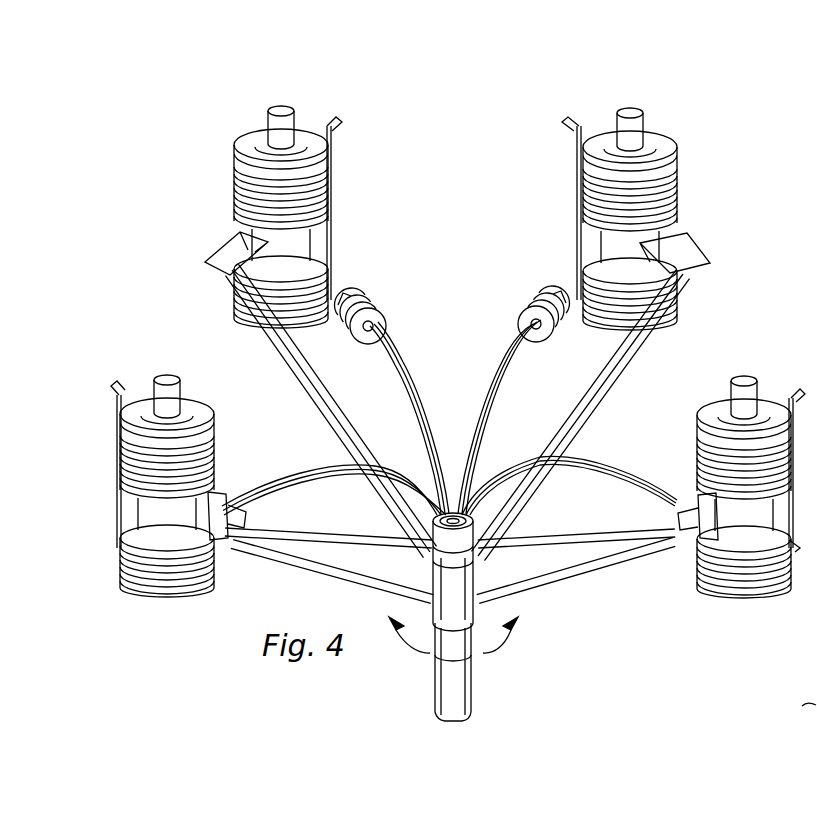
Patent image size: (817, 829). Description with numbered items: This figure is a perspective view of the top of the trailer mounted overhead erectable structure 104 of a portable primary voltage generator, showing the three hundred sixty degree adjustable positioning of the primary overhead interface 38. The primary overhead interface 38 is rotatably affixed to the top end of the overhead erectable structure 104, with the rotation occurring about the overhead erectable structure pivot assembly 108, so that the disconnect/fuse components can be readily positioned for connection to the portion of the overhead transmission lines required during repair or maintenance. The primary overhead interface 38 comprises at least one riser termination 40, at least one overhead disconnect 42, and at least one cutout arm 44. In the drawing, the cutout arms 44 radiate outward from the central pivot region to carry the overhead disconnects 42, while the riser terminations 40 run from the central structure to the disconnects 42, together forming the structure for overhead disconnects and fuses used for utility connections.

The primary overhead interface 38 is at (448, 165).
The riser termination 40 is at (497, 368).
The overhead disconnect 42 is at (576, 222).
The cutout arm 44 is at (607, 383).
The overhead erectable structure 104 is at (473, 690).
The overhead erectable structure pivot assembly 108 is at (430, 583).